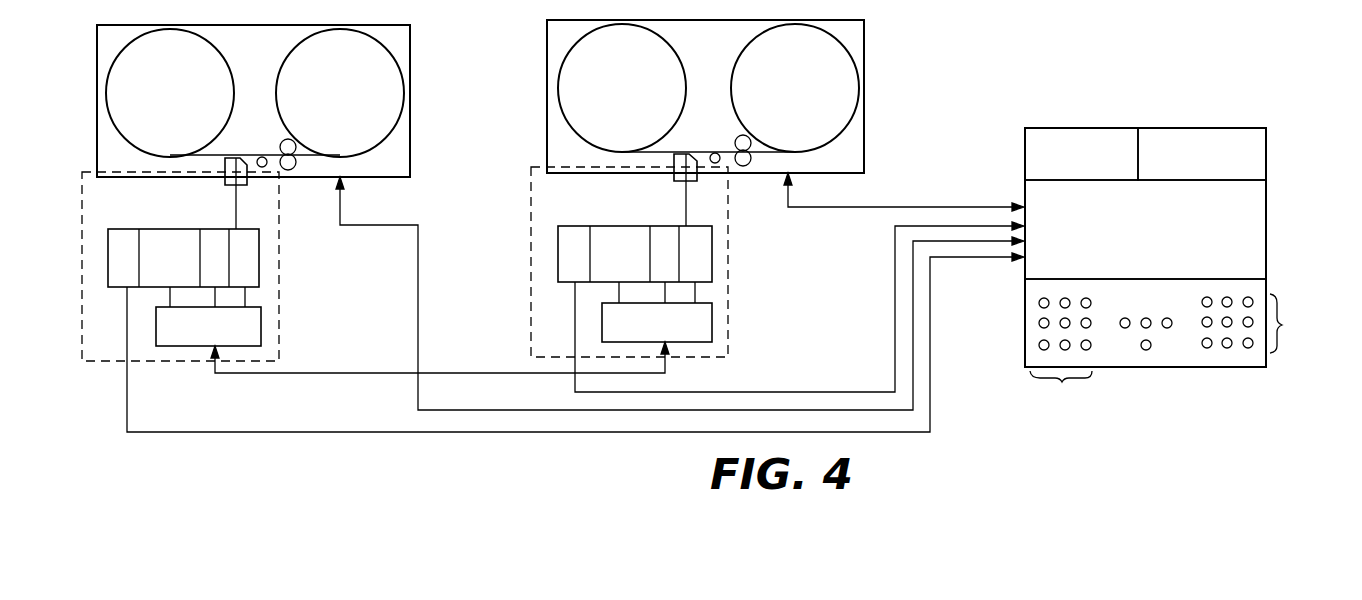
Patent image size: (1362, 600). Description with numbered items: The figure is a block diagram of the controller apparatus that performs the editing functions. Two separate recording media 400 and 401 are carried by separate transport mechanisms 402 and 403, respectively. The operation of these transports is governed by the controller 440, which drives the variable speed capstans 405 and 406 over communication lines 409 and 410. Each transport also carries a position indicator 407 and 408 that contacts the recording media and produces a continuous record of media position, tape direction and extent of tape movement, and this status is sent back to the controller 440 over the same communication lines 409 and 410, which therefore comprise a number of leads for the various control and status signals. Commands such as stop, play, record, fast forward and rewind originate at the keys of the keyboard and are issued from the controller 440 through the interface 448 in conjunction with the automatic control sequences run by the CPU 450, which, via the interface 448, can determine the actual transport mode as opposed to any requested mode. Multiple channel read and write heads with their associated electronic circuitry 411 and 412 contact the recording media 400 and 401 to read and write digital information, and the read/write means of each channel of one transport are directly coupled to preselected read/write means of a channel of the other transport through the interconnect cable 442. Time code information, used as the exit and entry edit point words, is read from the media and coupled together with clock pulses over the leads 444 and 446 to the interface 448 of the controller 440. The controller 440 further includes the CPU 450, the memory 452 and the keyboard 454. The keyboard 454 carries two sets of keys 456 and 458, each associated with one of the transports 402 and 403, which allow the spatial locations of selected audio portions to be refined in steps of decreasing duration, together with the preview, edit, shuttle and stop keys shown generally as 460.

The recording medium 400 is at (700, 151).
The recording medium 401 is at (248, 155).
The transport mechanism 402 is at (865, 38).
The transport mechanism 403 is at (96, 66).
The variable speed capstan 405 is at (748, 165).
The variable speed capstan 406 is at (292, 169).
The position indicator 407 is at (717, 163).
The position indicator 408 is at (264, 167).
The communication line 409 is at (905, 200).
The communication line 410 is at (419, 238).
The read/write electronic circuitry 411 is at (728, 303).
The read/write electronic circuitry 412 is at (279, 311).
The controller 440 is at (1272, 190).
The interconnect cable 442 is at (460, 372).
The lead 444 is at (789, 388).
The lead 446 is at (170, 434).
The interface 448 is at (1240, 245).
The central processor unit (CPU) 450 is at (1096, 128).
The memory 452 is at (1229, 128).
The keyboard 454 is at (1187, 350).
The set of keys 456 is at (1059, 357).
The set of keys 458 is at (1267, 323).
The preview, edit, shuttle and stop keys 460 is at (1146, 351).